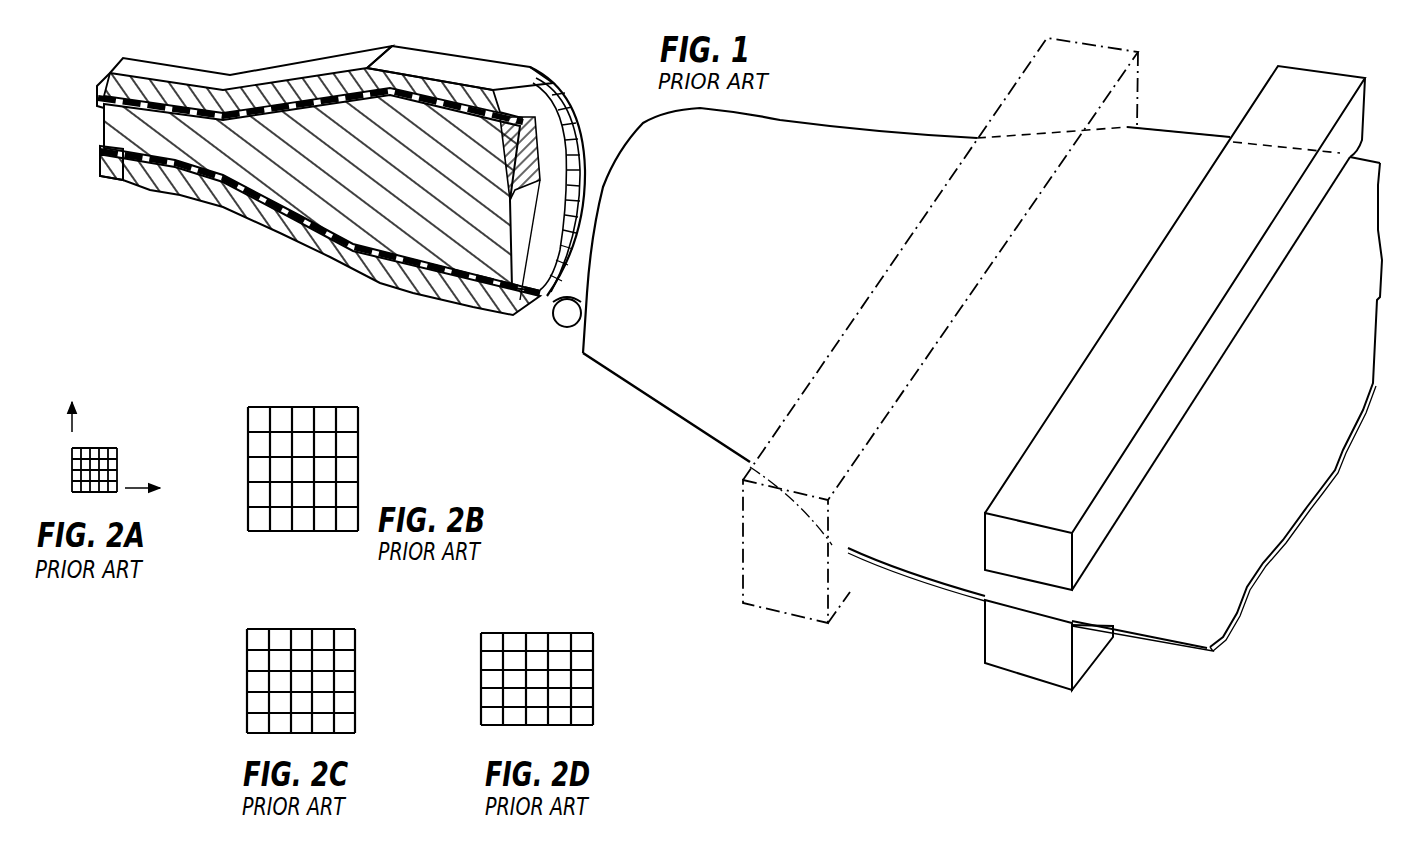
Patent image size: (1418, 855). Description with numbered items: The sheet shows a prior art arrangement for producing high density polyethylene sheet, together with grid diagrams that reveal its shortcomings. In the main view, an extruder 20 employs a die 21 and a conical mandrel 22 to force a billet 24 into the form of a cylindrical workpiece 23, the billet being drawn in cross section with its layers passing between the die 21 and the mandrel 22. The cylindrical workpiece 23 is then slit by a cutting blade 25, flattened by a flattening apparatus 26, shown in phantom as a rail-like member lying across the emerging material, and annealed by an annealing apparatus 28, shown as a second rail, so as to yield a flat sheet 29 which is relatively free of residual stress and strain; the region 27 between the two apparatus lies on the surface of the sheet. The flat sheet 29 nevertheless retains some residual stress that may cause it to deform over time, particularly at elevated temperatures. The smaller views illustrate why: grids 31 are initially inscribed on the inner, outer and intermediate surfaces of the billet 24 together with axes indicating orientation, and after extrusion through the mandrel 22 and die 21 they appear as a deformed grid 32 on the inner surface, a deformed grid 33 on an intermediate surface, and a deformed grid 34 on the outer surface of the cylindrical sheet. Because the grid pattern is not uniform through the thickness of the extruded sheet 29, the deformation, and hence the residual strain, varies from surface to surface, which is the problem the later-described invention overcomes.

In FIG. 1, the extruder 20 is at (467, 58).
In FIG. 1, the die 21 is at (286, 100).
In FIG. 1, the conical mandrel 22 is at (360, 176).
In FIG. 1, the cylindrical workpiece 23 is at (580, 109).
In FIG. 1, the billet 24 is at (95, 96).
In FIG. 1, the cutting blade 25 is at (576, 312).
In FIG. 1, the flattening apparatus 26 is at (985, 110).
In FIG. 1, the channel region 27 is at (1048, 350).
In FIG. 1, the annealing apparatus 28 is at (1022, 454).
In FIG. 1, the flat sheet 29 is at (1256, 450).
In FIG. 2A, the grids 31 is at (103, 446).
In FIG. 2B, the deformed grid on inner surface 32 is at (350, 444).
In FIG. 2C, the deformed grid on intermediate surface 33 is at (345, 658).
In FIG. 2D, the deformed grid on outer surface 34 is at (580, 660).